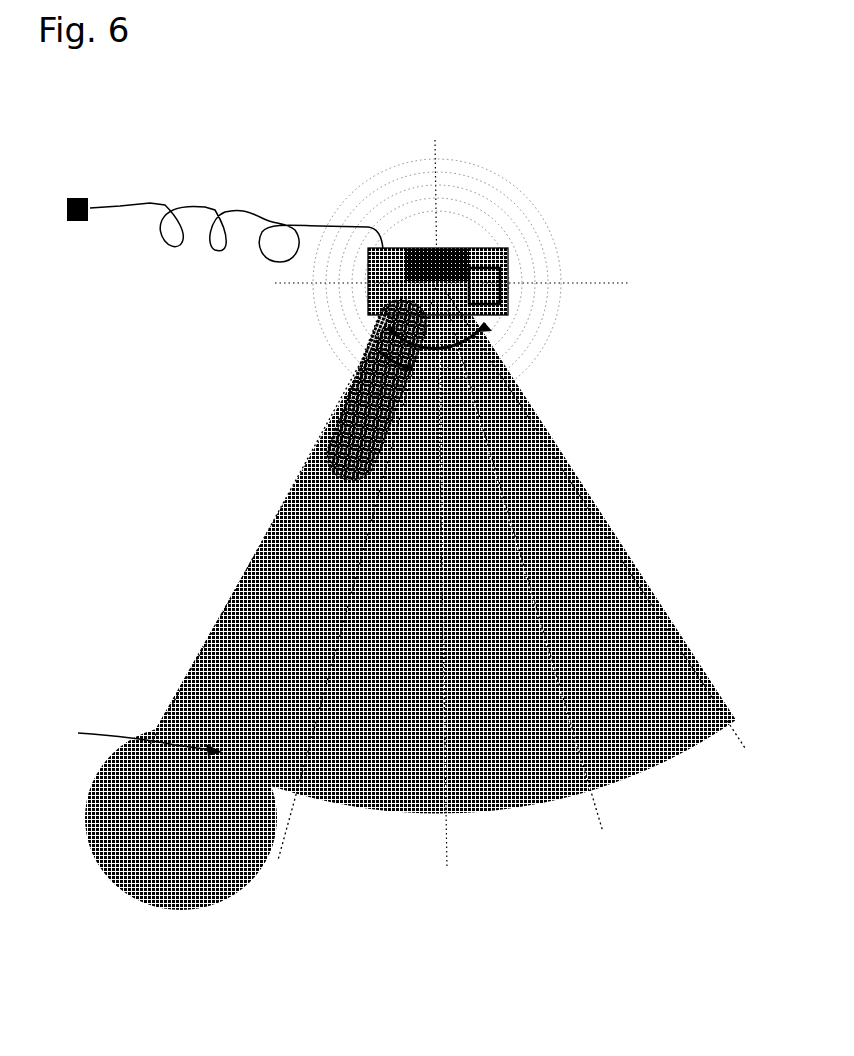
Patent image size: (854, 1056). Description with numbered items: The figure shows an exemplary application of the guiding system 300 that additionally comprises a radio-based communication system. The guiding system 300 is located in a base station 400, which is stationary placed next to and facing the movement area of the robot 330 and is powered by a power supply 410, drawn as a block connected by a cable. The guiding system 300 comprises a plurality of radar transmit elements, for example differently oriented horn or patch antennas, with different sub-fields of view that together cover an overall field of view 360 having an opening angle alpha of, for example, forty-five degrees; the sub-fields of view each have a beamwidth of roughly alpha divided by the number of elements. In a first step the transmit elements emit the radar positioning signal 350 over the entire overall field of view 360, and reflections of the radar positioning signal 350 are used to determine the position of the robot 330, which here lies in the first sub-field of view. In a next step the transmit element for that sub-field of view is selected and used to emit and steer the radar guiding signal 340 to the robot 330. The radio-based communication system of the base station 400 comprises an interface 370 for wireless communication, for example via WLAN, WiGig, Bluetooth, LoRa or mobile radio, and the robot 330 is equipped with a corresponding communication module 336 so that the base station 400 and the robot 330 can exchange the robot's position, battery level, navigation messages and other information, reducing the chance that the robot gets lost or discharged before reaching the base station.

The guiding system 300 is at (447, 262).
The robot 330 is at (198, 853).
The communication module 336 is at (123, 738).
The radar guiding signal 340 is at (365, 357).
The radar positioning signal 350 is at (567, 506).
The overall field of view 360 is at (483, 337).
The interface 370 is at (502, 288).
The base station 400 is at (490, 252).
The power supply 410 is at (70, 197).